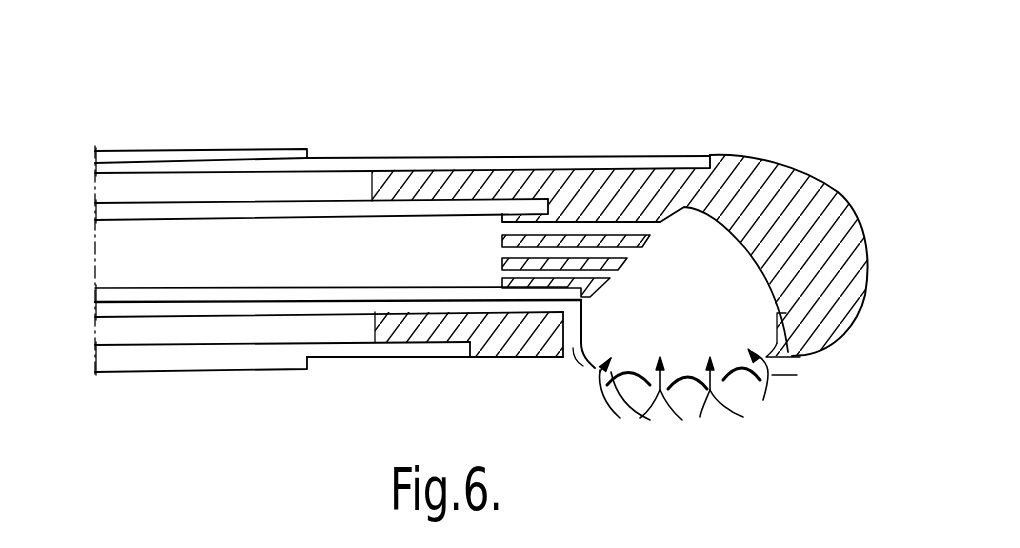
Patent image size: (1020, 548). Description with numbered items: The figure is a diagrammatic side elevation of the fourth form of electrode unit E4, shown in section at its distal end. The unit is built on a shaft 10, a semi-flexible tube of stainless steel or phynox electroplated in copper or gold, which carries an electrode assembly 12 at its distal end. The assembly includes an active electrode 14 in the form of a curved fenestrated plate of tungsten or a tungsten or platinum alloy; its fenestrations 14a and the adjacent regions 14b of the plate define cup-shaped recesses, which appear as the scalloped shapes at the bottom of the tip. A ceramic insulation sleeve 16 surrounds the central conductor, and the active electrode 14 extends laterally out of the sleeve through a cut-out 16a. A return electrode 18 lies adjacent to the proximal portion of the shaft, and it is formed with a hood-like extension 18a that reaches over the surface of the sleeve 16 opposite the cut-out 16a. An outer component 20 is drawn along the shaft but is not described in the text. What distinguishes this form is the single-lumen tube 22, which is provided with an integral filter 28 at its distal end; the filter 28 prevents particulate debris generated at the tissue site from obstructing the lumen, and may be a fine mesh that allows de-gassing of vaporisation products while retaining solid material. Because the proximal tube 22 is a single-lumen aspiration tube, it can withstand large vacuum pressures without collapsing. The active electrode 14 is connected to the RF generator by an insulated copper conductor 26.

The shaft 10 is at (132, 163).
The electrode assembly 12 is at (713, 150).
The active electrode 14 is at (573, 358).
The fenestrations 14a is at (763, 398).
The regions of the active electrode adjacent to the fenestrations 14b is at (630, 388).
The ceramic insulation sleeve 16 is at (845, 255).
The cut-out 16a is at (568, 321).
The return electrode 18 is at (340, 165).
The hood-like extension 18a is at (587, 163).
The outer sleeve 20 is at (268, 148).
The single-lumen tube 22 is at (345, 212).
The insulated copper conductor 26 is at (328, 310).
The filter 28 is at (640, 223).
The electrode unit E4 is at (487, 153).